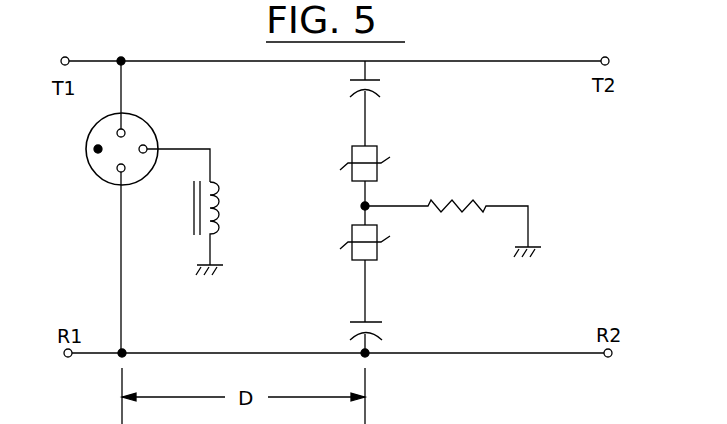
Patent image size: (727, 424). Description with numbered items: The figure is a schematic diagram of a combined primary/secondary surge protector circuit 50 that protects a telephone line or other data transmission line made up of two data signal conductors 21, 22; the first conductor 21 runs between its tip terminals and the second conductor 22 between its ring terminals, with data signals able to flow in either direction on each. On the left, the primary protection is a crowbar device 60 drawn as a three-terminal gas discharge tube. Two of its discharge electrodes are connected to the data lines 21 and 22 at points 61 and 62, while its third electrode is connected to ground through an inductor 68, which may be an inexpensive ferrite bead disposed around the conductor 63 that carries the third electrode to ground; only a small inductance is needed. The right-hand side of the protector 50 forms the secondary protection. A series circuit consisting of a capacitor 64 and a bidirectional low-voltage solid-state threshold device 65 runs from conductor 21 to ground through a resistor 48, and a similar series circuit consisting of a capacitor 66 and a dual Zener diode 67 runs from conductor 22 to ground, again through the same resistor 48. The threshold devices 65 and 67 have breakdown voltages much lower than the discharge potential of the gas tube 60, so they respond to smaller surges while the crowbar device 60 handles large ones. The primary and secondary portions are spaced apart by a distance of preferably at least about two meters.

The combined primary/secondary surge protector circuit 50 is at (273, 103).
The first data signal conductor 21 is at (177, 62).
The second data signal conductor 22 is at (222, 352).
The connection point 61 is at (122, 62).
The connection point 62 is at (125, 351).
The crowbar device 60 is at (105, 178).
The conductor 63 is at (178, 145).
The inductor 68 is at (216, 210).
The capacitor 64 is at (352, 88).
The bidirectional low voltage solid-state threshold device 65 is at (348, 154).
The dual Zener diode 67 is at (348, 232).
The capacitor 66 is at (352, 330).
The resistor 48 is at (458, 203).